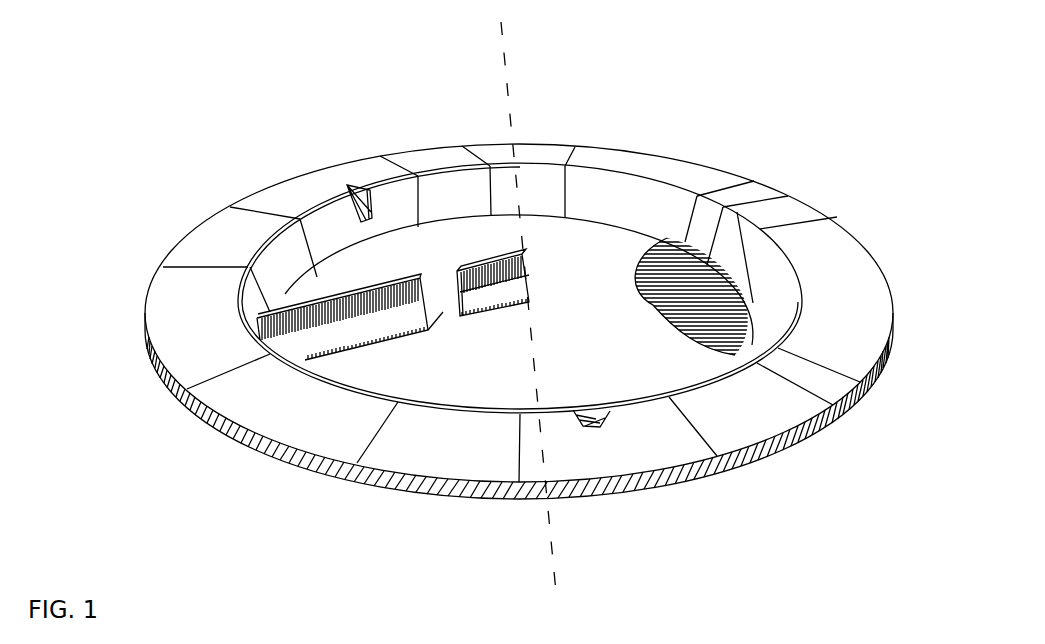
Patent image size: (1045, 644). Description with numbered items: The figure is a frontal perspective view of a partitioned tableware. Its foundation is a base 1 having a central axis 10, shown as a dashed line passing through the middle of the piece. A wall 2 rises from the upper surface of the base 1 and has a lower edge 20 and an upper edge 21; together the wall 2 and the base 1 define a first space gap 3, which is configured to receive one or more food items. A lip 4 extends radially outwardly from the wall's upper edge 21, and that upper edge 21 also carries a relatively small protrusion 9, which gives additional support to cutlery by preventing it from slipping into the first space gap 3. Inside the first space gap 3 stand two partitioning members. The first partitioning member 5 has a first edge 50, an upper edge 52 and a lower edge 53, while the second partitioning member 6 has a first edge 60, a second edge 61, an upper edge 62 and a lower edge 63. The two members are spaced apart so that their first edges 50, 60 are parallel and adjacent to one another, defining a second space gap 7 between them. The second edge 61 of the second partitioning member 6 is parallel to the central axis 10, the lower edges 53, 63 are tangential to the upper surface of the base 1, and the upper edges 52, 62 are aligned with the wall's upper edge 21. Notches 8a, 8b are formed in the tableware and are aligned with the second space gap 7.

The base 1 is at (530, 277).
The wall 2 is at (637, 200).
The first space gap 3 is at (623, 300).
The lip 4 is at (857, 290).
The first partitioning member 5 is at (292, 340).
The second partitioning member 6 is at (492, 316).
The second space gap 7 is at (443, 312).
The notch 8a is at (347, 187).
The notch 8b is at (598, 428).
The protrusion 9 is at (783, 343).
The central axis 10 is at (508, 73).
The lower edge 20 is at (472, 217).
The upper edge 21 is at (745, 219).
The first edge 50 is at (420, 308).
The upper edge 52 is at (262, 327).
The lower edge 53 is at (352, 353).
The first edge 60 is at (460, 292).
The second edge 61 is at (712, 285).
The upper edge 62 is at (460, 267).
The lower edge 63 is at (473, 317).